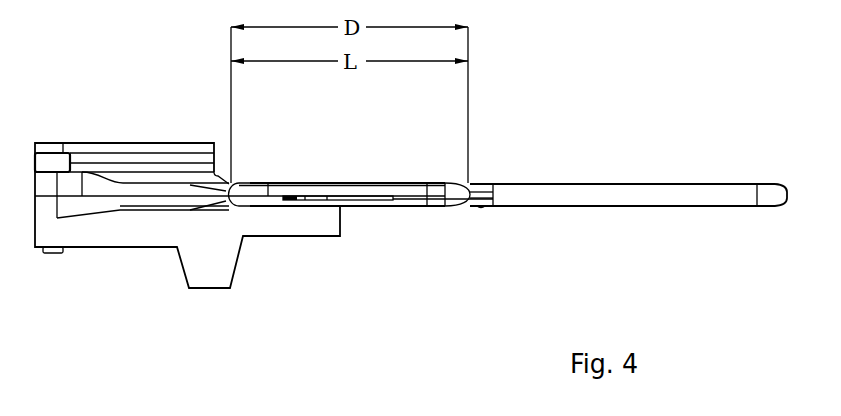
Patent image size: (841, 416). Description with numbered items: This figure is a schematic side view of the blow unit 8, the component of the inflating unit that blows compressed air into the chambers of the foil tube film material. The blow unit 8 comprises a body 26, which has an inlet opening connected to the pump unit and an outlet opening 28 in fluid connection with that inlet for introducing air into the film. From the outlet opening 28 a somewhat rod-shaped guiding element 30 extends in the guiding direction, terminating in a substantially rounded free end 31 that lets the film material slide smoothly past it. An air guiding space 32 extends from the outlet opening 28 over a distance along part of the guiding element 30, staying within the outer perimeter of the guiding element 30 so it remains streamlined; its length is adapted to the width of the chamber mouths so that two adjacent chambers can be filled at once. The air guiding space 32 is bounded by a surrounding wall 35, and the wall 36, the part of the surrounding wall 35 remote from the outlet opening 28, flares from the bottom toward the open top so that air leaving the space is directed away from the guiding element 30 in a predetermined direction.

The blow unit 8 is at (161, 114).
The body 26 is at (158, 231).
The outlet opening 28 is at (240, 189).
The guiding element 30 is at (635, 194).
The free end 31 is at (770, 194).
The air guiding space 32 is at (405, 191).
The surrounding wall 35 is at (393, 183).
The wall 36 is at (453, 189).